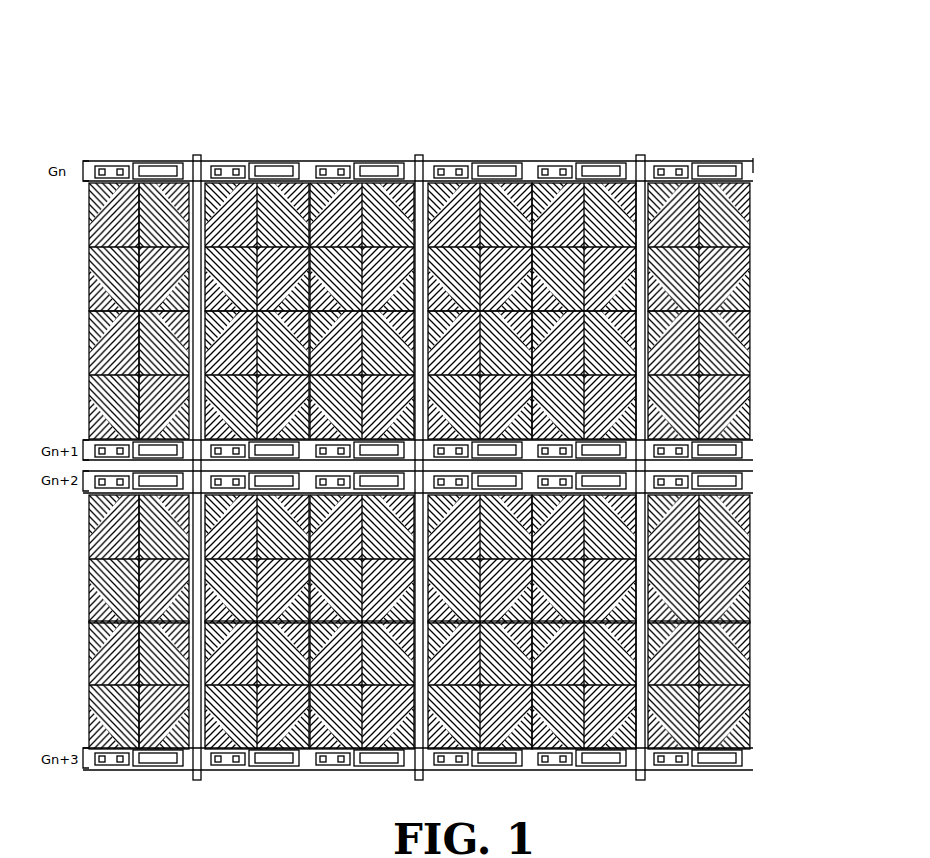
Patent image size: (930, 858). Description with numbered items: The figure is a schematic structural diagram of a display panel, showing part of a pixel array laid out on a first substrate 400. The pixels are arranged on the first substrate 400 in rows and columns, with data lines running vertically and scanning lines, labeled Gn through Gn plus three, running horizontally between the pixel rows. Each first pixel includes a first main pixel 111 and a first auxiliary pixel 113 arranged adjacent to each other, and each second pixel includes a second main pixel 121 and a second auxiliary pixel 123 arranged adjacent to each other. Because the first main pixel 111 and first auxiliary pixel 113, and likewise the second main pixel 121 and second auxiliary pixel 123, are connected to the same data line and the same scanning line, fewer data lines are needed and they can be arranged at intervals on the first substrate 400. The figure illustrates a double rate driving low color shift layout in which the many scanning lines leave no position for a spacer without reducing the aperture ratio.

The first main pixel 111 is at (106, 228).
The first auxiliary pixel 113 is at (156, 362).
The second main pixel 121 is at (300, 240).
The second auxiliary pixel 123 is at (268, 372).
The first substrate 400 is at (750, 150).